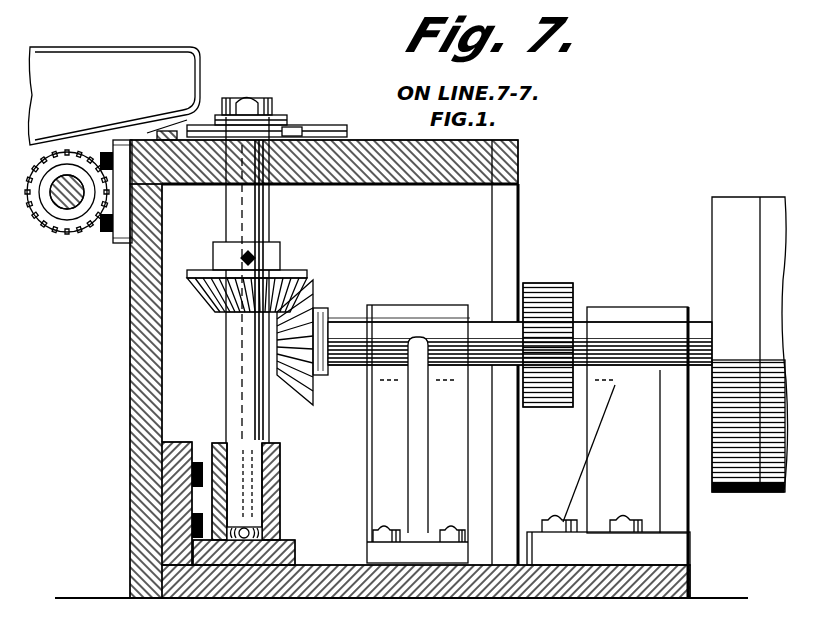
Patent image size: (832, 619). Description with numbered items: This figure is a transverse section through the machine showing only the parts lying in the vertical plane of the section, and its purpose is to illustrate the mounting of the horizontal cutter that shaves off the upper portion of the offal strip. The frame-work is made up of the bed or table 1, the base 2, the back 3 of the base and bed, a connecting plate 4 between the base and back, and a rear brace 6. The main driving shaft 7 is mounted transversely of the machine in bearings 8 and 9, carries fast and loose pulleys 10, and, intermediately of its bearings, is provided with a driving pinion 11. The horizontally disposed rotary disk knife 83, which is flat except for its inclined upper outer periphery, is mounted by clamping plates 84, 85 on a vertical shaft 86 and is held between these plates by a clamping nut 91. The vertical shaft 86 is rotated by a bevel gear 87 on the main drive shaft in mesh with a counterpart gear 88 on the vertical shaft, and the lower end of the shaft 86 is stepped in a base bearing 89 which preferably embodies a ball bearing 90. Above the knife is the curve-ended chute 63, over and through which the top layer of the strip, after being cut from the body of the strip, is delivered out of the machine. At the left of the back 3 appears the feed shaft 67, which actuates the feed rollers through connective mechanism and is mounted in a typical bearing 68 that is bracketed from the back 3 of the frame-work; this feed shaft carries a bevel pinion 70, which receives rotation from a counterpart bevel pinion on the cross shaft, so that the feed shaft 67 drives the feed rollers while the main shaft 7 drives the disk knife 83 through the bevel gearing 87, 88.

The bed or table 1 is at (500, 161).
The base 2 is at (395, 598).
The back of the base and bed 3 is at (135, 385).
The connecting plate 4 is at (170, 503).
The rear brace 6 is at (510, 256).
The main driving shaft 7 is at (358, 356).
The bearing 8 is at (639, 313).
The bearing 9 is at (393, 312).
The fast and loose pulleys 10 is at (735, 206).
The driving pinion 11 is at (556, 292).
The curve-ended chute 63 is at (114, 96).
The feed shaft 67 is at (67, 208).
The bearing 68 is at (122, 232).
The bevel pinion 70 is at (62, 148).
The rotary disk knife 83 is at (300, 131).
The clamping plate 84 is at (285, 120).
The clamping plate 85 is at (300, 140).
The vertical shaft 86 is at (240, 213).
The bevel gear 87 is at (312, 302).
The counterpart gear 88 is at (286, 272).
The base bearing 89 is at (280, 473).
The ball bearing 90 is at (276, 530).
The clamping nut 91 is at (220, 108).